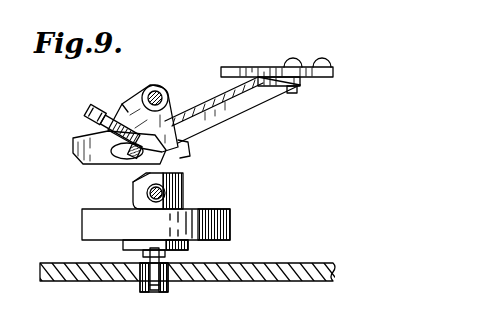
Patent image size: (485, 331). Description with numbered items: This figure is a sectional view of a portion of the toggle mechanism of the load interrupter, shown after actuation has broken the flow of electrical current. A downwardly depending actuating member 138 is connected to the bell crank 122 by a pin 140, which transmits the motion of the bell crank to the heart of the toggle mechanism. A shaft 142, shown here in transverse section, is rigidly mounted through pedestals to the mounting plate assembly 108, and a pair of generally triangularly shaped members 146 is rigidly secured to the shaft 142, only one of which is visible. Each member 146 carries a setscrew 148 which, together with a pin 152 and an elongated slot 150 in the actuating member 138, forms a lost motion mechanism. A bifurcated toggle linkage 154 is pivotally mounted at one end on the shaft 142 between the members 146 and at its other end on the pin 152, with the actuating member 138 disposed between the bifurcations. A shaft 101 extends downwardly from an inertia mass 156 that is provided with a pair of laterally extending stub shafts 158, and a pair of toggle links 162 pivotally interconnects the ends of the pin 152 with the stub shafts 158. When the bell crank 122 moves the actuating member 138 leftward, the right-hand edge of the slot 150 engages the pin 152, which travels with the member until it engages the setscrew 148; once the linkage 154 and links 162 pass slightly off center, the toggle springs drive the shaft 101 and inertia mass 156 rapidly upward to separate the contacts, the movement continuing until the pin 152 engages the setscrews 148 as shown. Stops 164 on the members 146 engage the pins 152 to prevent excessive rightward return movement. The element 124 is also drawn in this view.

The shaft 101 is at (158, 293).
The mounting plate assembly 108 is at (305, 266).
The bell crank 122 is at (334, 73).
The rounded boss 124 is at (322, 59).
The actuating member 138 is at (228, 115).
The pin 140 is at (301, 56).
The shaft 142 is at (161, 93).
The triangularly shaped member 146 is at (146, 86).
The setscrew 148 is at (84, 114).
The elongated slot 150 is at (92, 163).
The pin 152 is at (126, 158).
The bifurcated toggle linkage 154 is at (121, 102).
The inertia mass 156 is at (82, 228).
The stub shaft 158 is at (165, 197).
The toggle link 162 is at (137, 186).
The stop 164 is at (182, 151).